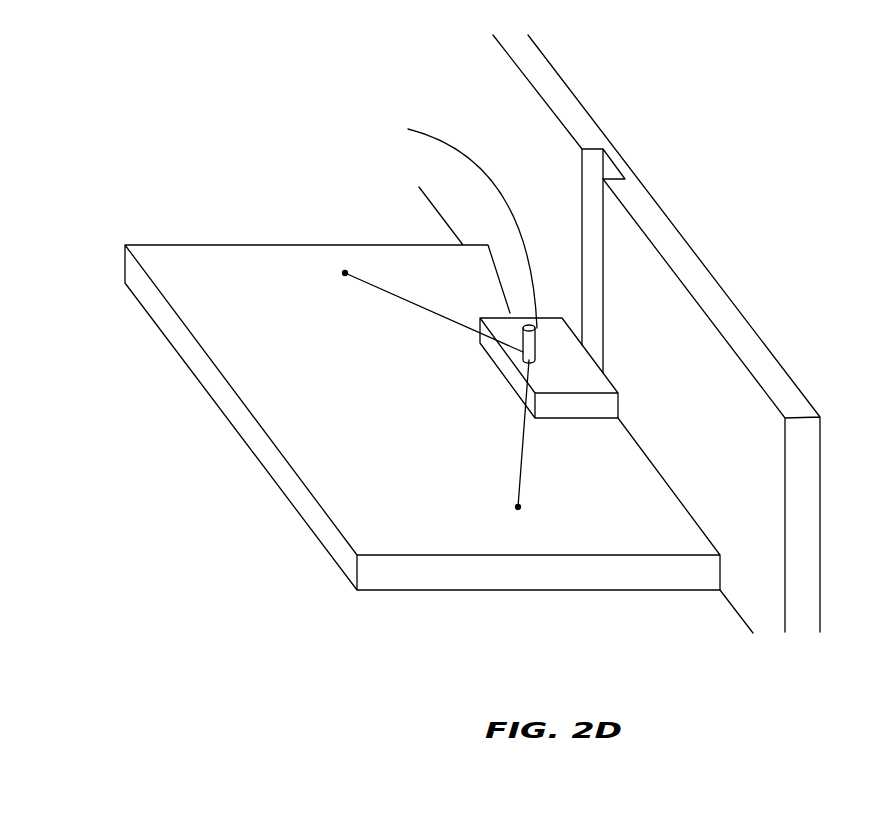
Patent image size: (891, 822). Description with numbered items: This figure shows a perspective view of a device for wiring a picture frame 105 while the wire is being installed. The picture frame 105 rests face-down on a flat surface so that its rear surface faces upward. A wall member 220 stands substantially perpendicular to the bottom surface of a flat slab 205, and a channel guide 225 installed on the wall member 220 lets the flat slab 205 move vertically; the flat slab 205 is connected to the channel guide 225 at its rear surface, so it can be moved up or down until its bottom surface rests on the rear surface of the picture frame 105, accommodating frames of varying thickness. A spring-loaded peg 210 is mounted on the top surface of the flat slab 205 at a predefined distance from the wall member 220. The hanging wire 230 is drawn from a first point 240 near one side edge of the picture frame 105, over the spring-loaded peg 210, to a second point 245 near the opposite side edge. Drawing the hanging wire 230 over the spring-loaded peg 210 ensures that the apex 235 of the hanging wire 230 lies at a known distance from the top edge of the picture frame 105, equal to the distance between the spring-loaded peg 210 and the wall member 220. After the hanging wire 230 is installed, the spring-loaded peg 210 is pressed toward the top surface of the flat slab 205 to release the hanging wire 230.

The picture frame 105 is at (125, 285).
The wall member 220 is at (547, 60).
The channel guide 225 is at (610, 165).
The flat slab 205 is at (568, 418).
The spring-loaded peg 210 is at (527, 320).
The first point 240 is at (345, 273).
The apex 235 is at (451, 220).
The hanging wire 230 is at (518, 478).
The second point 245 is at (518, 507).